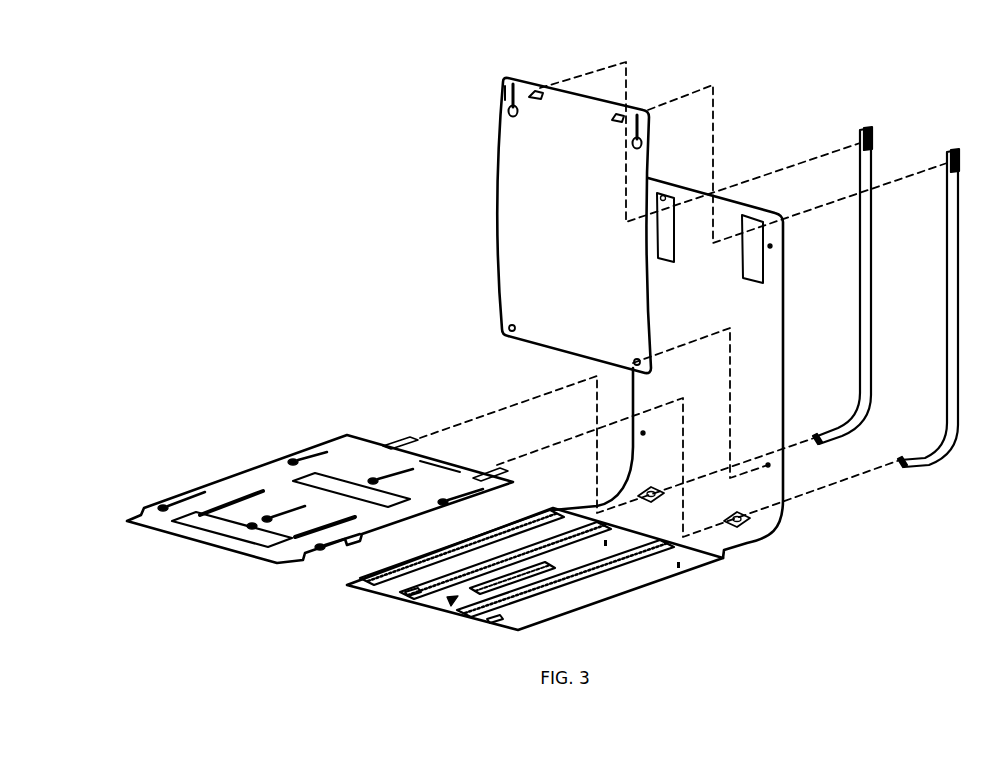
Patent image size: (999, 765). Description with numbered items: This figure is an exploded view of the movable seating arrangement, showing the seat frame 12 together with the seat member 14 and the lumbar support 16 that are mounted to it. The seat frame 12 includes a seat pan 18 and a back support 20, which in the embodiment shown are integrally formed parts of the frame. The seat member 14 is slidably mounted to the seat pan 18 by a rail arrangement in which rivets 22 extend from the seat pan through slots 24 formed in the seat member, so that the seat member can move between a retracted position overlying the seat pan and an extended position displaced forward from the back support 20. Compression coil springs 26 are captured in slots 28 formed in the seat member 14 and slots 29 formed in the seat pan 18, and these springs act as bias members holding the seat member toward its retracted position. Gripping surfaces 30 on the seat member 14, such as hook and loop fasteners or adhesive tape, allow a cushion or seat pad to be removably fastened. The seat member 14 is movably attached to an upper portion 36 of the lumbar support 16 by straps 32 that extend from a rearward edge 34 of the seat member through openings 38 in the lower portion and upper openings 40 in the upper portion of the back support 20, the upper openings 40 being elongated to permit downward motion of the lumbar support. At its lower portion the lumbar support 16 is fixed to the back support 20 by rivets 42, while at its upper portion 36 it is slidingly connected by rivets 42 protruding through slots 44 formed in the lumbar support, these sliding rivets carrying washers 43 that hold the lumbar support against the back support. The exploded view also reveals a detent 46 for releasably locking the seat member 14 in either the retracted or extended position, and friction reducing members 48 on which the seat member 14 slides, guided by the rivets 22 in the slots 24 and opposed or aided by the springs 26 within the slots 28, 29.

The seat frame 12 is at (784, 336).
The seat member 14 is at (279, 558).
The lumbar support 16 is at (519, 194).
The seat pan 18 is at (567, 611).
The back support 20 is at (761, 305).
The rivets 22 is at (165, 505).
The slots 24 is at (361, 541).
The compression coil springs 26 is at (243, 493).
The slots 28 is at (337, 523).
The slots 29 is at (437, 567).
The gripping surfaces 30 is at (347, 486).
The straps 32 is at (865, 270).
The rearward edge 34 is at (452, 459).
The upper portion 36 is at (534, 91).
The openings 38 is at (737, 525).
The upper openings 40 is at (661, 200).
The rivets 42 is at (508, 113).
The washers 43 is at (519, 112).
The slots 44 is at (504, 90).
The detent 46 is at (443, 608).
The friction reducing members 48 is at (413, 592).